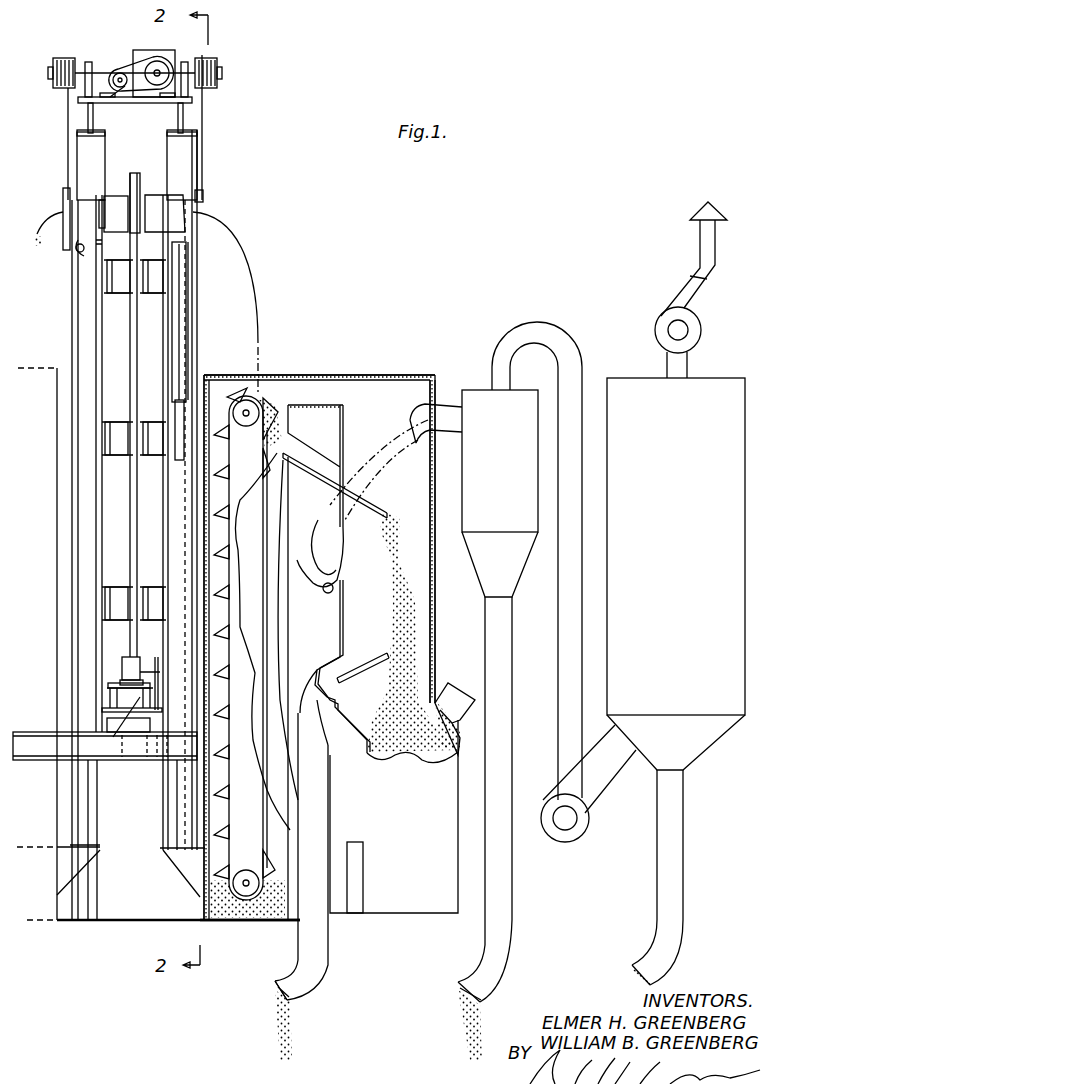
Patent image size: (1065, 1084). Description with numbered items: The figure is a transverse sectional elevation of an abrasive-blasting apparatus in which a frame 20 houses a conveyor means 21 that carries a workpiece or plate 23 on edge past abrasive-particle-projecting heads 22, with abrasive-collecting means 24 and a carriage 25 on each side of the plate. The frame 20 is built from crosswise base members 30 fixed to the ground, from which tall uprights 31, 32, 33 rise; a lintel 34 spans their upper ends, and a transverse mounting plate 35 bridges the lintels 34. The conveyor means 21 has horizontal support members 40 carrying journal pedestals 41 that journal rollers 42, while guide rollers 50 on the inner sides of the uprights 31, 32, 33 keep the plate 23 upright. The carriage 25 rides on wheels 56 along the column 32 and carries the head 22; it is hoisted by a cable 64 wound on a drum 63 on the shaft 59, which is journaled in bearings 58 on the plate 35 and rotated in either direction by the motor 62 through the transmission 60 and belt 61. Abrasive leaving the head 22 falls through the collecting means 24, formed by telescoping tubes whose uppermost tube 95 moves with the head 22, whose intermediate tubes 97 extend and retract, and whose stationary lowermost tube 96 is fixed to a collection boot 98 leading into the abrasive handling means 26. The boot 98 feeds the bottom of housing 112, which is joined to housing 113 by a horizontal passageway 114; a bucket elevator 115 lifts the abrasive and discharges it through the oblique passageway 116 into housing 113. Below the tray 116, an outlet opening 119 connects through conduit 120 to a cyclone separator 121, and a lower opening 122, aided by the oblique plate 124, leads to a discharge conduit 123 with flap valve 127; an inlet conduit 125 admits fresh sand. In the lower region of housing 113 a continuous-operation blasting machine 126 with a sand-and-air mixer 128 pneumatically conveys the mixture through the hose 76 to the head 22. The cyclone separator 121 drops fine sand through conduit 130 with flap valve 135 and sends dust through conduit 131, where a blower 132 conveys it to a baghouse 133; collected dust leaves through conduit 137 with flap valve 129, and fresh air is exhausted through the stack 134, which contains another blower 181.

The frame 20 is at (198, 316).
The conveyor means 21 is at (115, 657).
The abrasive-particle-projecting head 22 is at (119, 189).
The workpiece 23 is at (132, 345).
The abrasive-collecting means 24 is at (186, 333).
The carriage 25 is at (204, 192).
The abrasive handling means 26 is at (362, 369).
The base members 30 is at (40, 760).
The uprights 31 is at (197, 280).
The uprights 32 is at (170, 192).
The uprights 33 is at (84, 304).
The top frame member or lintel 34 is at (88, 113).
The transverse mounting plate 35 is at (192, 100).
The support members 40 is at (113, 735).
The journal pedestals 41 is at (118, 690).
The roller 42 is at (133, 665).
The guide rollers 50 is at (145, 290).
The wheels 56 is at (78, 252).
The journal bearings 58 is at (88, 62).
The shaft 59 is at (100, 72).
The transmission 60 is at (158, 62).
The belt 61 is at (125, 72).
The motor 62 is at (120, 97).
The drums or winches 63 is at (60, 58).
The cable 64 is at (68, 134).
The hose or conduit 76 is at (52, 228).
The uppermost telescopic tube 95 is at (186, 252).
The lowermost telescopic tube 96 is at (170, 810).
The intermediate telescopic tubes 97 is at (178, 370).
The collection boot or conduit 98 is at (178, 870).
The housing 112 is at (204, 380).
The housing 113 is at (435, 602).
The horizontal passageway 114 is at (300, 380).
The bucket conveyor or elevator 115 is at (228, 800).
The passageway 116 is at (312, 462).
The outlet opening 119 is at (325, 595).
The conduit 120 is at (430, 412).
The cyclone separator 121 is at (479, 384).
The opening 122 is at (335, 655).
The discharge conduit 123 is at (328, 932).
The tray or plate 124 is at (355, 670).
The inlet conduit 125 is at (465, 691).
The continuous-operation blasting machine 126 is at (420, 913).
The one-way or flap valve 127 is at (258, 1010).
The sand-and-air mixer 128 is at (355, 850).
The one-way or flap valve 129 is at (618, 995).
The lower-end discharge conduit 130 is at (512, 928).
The upper-end discharge conduit 131 is at (568, 348).
The blower or fan 132 is at (589, 820).
The baghouse 133 is at (722, 385).
The stack 134 is at (700, 264).
The one-way or flap valve 135 is at (444, 1013).
The conduit 137 is at (685, 893).
The fan or blower 181 is at (702, 333).